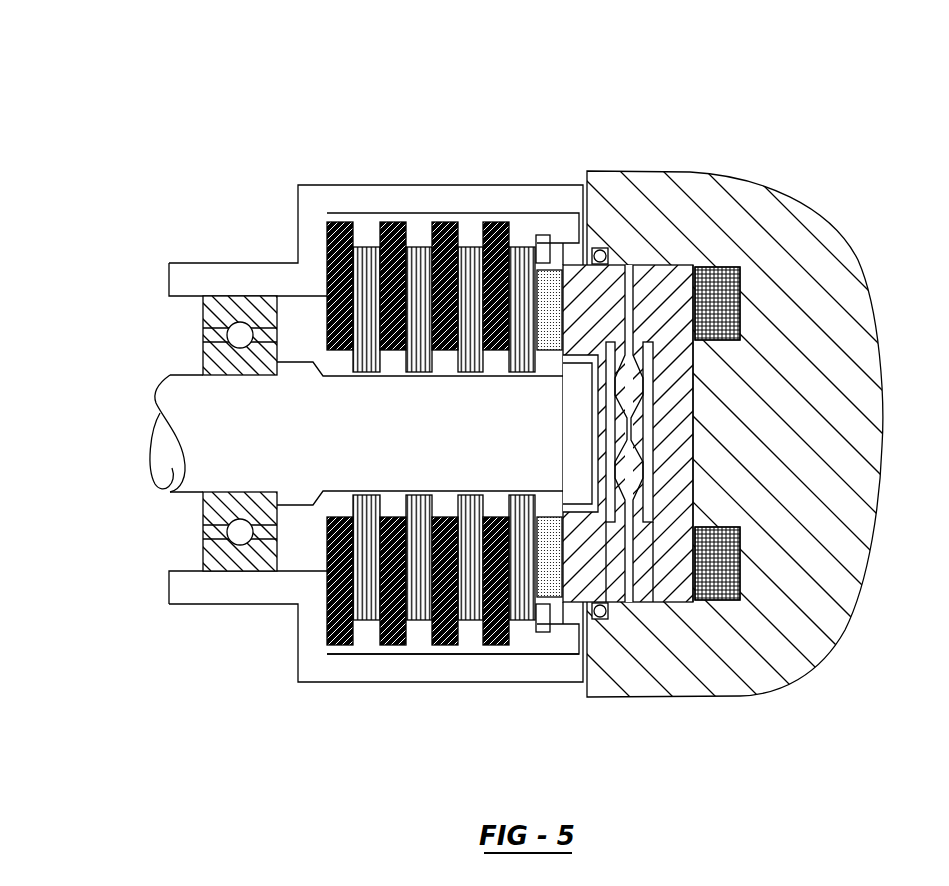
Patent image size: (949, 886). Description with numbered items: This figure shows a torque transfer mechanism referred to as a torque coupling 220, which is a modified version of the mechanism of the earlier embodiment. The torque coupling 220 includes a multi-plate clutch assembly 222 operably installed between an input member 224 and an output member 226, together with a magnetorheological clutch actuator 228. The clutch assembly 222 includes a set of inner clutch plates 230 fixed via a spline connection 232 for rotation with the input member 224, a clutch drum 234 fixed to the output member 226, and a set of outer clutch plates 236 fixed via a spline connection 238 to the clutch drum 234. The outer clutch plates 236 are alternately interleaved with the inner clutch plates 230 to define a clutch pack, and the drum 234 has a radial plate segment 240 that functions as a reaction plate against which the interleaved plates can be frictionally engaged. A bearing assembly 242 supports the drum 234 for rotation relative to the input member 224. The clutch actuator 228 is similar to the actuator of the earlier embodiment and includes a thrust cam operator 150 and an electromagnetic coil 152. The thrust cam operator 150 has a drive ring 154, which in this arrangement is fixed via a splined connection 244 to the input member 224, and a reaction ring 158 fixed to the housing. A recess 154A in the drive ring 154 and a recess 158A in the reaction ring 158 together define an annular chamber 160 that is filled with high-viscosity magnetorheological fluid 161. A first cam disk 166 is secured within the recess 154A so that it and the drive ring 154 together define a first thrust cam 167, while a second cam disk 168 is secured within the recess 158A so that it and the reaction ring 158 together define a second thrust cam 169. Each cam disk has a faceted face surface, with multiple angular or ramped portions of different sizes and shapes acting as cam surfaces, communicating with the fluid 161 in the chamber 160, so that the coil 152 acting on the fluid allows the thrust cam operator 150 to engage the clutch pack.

The torque coupling 220 is at (455, 89).
The multi-plate clutch assembly 222 is at (404, 437).
The radial plate segment 240 is at (315, 238).
The thrust cam operator 150 is at (587, 436).
The magnetorheological clutch actuator 228 is at (713, 207).
The electromagnetic coil 152 is at (747, 293).
The inner clutch plates 230 is at (363, 342).
The spline connection 232 is at (393, 370).
The input member 224 is at (185, 405).
The splined connection 244 is at (575, 367).
The recess 154A is at (610, 425).
The first cam disk 166 is at (620, 493).
The magnetorheological fluid 161 is at (630, 388).
The recess 158A is at (647, 430).
The annular chamber 160 is at (628, 470).
The second cam disk 168 is at (640, 496).
The bearing assembly 242 is at (210, 548).
The output member 226 is at (228, 593).
The outer clutch plates 236 is at (327, 630).
The spline connection 238 is at (368, 635).
The clutch drum 234 is at (400, 667).
The drive ring 154 is at (578, 622).
The first thrust cam 167 is at (610, 531).
The second thrust cam 169 is at (653, 531).
The reaction ring 158 is at (678, 580).